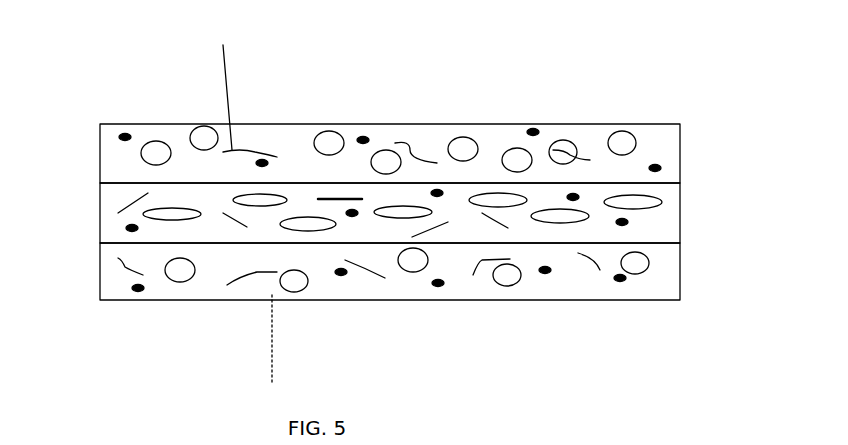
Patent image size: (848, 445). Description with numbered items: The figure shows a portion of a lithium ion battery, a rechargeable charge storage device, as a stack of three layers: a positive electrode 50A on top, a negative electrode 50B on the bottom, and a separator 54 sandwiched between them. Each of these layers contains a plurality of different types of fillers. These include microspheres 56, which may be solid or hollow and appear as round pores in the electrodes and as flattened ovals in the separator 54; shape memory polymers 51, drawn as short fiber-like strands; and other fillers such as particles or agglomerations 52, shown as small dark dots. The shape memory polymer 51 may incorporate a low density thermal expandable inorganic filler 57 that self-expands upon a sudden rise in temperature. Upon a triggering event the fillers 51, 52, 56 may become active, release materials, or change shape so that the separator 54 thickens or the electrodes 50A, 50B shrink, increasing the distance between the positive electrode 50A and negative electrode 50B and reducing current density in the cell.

The positive electrode 50A is at (100, 153).
The negative electrode 50B is at (100, 272).
The separator 54 is at (100, 193).
The microspheres 56 is at (160, 141).
The particles or agglomerations 52 is at (364, 138).
The shape memory polymers 51 is at (330, 197).
The thermal expandable inorganic filler 57 is at (249, 210).